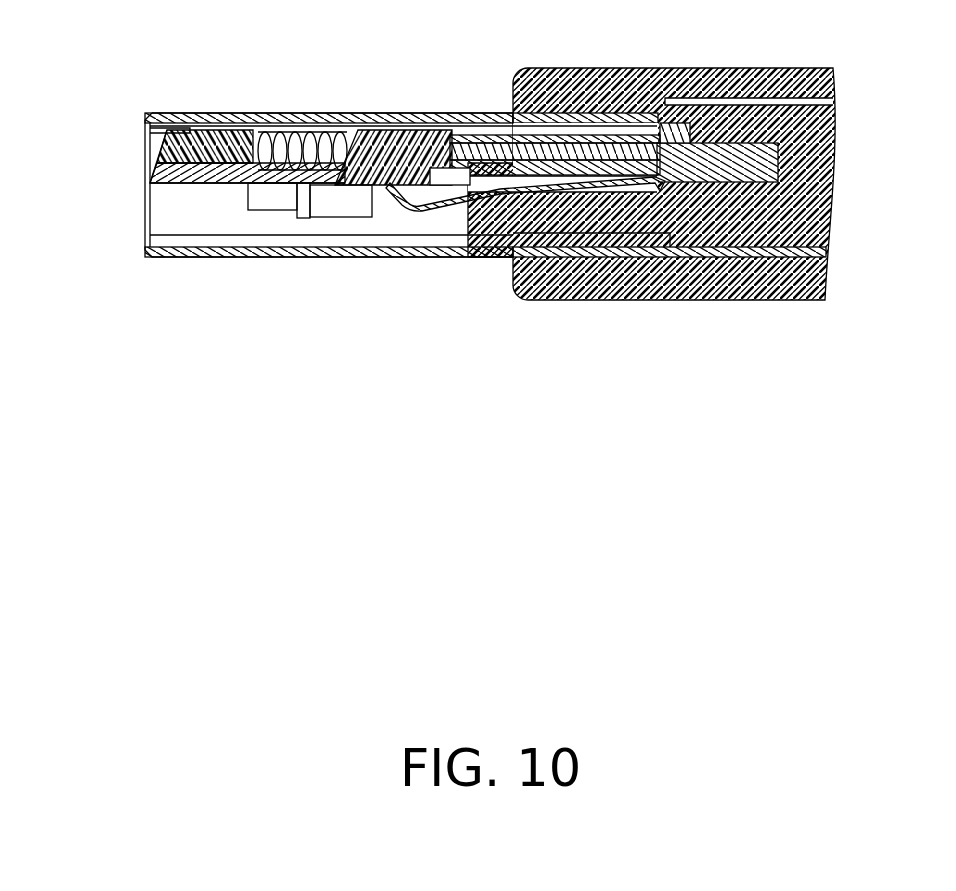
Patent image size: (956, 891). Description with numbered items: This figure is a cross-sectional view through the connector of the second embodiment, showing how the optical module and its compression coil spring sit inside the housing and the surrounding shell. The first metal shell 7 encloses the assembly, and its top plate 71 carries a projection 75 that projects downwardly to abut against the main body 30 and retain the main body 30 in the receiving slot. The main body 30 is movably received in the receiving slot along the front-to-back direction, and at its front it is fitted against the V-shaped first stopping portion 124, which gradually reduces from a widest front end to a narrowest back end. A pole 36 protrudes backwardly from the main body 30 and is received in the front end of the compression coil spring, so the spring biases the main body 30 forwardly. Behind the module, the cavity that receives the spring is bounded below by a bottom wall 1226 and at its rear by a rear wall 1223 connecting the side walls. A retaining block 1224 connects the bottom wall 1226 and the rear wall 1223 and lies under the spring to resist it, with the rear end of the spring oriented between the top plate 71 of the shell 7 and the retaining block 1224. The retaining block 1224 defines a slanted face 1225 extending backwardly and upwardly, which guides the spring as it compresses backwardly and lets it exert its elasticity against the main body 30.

The first metal shell 7 is at (300, 115).
The top plate 71 is at (237, 120).
The projection 75 is at (187, 132).
The V-shaped first stopping portion 124 is at (153, 152).
The main body 30 is at (203, 150).
The pole 36 is at (245, 180).
The rear wall 1223 is at (335, 162).
The retaining block 1224 is at (320, 167).
The slanted face 1225 is at (373, 185).
The bottom wall 1226 is at (307, 183).